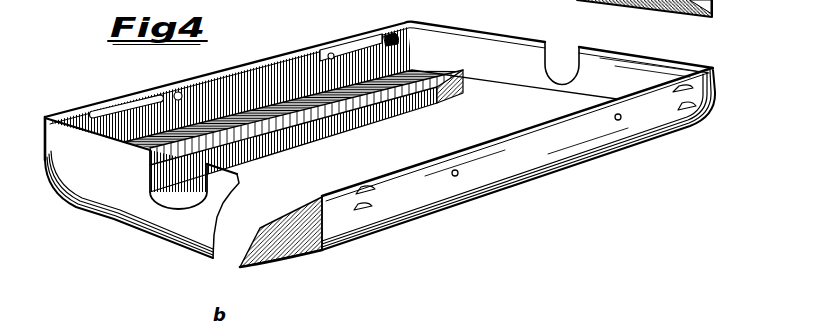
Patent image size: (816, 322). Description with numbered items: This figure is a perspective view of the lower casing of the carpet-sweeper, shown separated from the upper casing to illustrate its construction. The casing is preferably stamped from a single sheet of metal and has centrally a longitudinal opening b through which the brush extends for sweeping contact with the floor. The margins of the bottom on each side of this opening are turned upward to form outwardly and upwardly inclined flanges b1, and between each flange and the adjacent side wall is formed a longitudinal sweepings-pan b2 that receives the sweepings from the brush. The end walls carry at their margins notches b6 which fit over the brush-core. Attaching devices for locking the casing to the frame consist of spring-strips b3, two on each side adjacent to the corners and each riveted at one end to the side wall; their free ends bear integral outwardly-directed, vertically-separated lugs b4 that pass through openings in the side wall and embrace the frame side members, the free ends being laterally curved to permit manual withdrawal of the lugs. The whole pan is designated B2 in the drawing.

The longitudinal opening b is at (379, 91).
The inclined flange b1 is at (302, 212).
The sweepings-pan b2 is at (240, 117).
The spring-strip b3 is at (365, 28).
The lug b4 is at (376, 191).
The notch b6 is at (596, 85).
The pan B2 is at (380, 164).